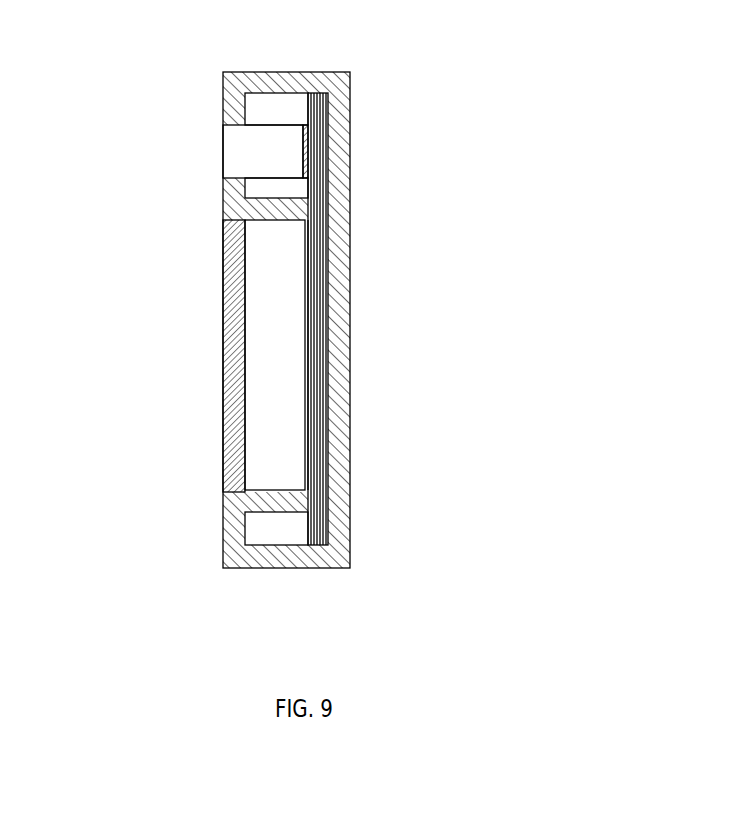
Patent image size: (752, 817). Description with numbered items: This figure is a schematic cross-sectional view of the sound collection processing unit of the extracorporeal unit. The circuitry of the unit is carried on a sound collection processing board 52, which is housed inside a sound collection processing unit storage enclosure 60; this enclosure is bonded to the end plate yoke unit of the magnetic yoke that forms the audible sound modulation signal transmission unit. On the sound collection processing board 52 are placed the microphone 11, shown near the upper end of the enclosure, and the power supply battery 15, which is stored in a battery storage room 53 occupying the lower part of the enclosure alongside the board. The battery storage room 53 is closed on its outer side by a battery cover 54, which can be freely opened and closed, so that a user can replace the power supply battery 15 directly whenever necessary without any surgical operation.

The microphone 11 is at (260, 140).
The power supply battery 15 is at (267, 477).
The sound collection processing board 52 is at (320, 330).
The battery storage room 53 is at (282, 220).
The battery cover 54 is at (222, 425).
The sound collection processing unit storage enclosure 60 is at (345, 391).